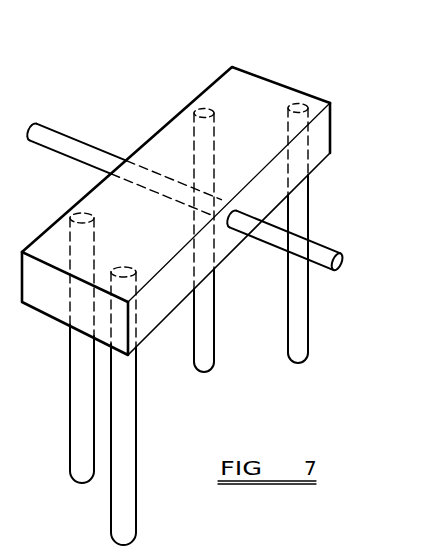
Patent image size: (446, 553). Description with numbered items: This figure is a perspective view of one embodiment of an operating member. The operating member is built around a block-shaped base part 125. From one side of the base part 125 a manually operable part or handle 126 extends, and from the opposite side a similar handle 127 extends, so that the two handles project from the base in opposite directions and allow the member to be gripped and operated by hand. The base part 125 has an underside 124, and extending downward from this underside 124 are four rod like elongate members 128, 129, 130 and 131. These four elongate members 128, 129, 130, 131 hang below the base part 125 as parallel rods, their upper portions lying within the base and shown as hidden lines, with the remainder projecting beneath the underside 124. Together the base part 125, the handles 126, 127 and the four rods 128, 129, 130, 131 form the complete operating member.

The underside 124 is at (229, 258).
The base part 125 is at (238, 87).
The handle 126 is at (85, 153).
The handle 127 is at (313, 248).
The rod like elongate member 128 is at (294, 362).
The rod like elongate member 129 is at (131, 538).
The rod like elongate member 130 is at (74, 480).
The rod like elongate member 131 is at (203, 370).